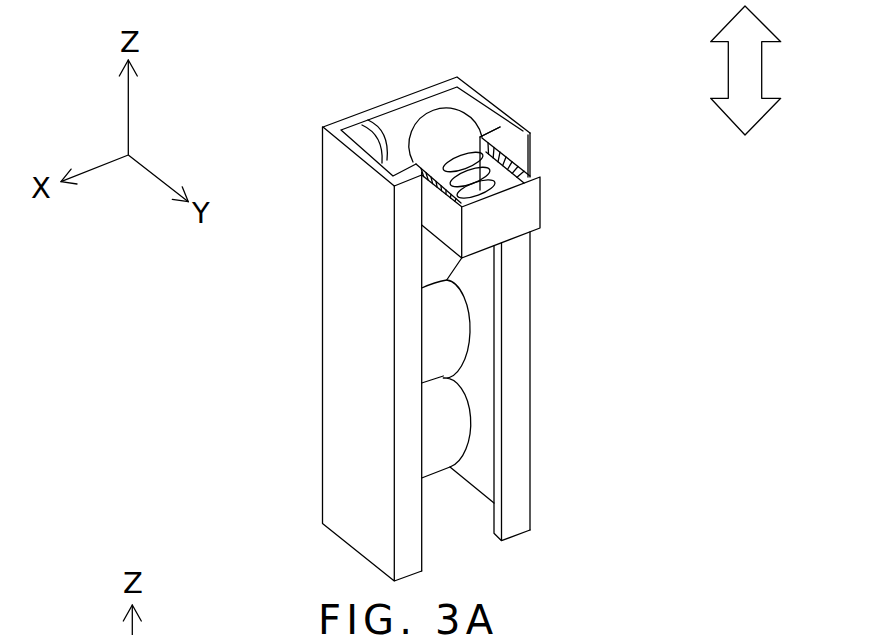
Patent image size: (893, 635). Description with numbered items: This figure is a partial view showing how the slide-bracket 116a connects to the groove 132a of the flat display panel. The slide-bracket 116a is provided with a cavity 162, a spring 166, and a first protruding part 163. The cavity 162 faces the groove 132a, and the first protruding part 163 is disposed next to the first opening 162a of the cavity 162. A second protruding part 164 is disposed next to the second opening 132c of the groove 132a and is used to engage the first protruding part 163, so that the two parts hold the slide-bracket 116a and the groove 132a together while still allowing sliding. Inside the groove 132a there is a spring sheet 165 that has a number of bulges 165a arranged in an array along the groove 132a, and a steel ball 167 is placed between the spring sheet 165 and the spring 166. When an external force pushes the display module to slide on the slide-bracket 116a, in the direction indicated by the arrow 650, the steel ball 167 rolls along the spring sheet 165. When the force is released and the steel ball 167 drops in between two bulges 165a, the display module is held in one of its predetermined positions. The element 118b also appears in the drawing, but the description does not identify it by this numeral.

The slide-bracket 116a is at (527, 212).
The side wall 118b is at (513, 470).
The groove 132a is at (460, 95).
The second opening 132c is at (478, 308).
The cavity 162 is at (500, 132).
The first opening 162a is at (452, 147).
The first protruding part 163 is at (488, 167).
The second protruding part 164 is at (510, 140).
The spring sheet 165 is at (401, 118).
The bulges 165a is at (443, 352).
The spring 166 is at (527, 160).
The steel ball 167 is at (417, 138).
The arrow 650 is at (742, 75).